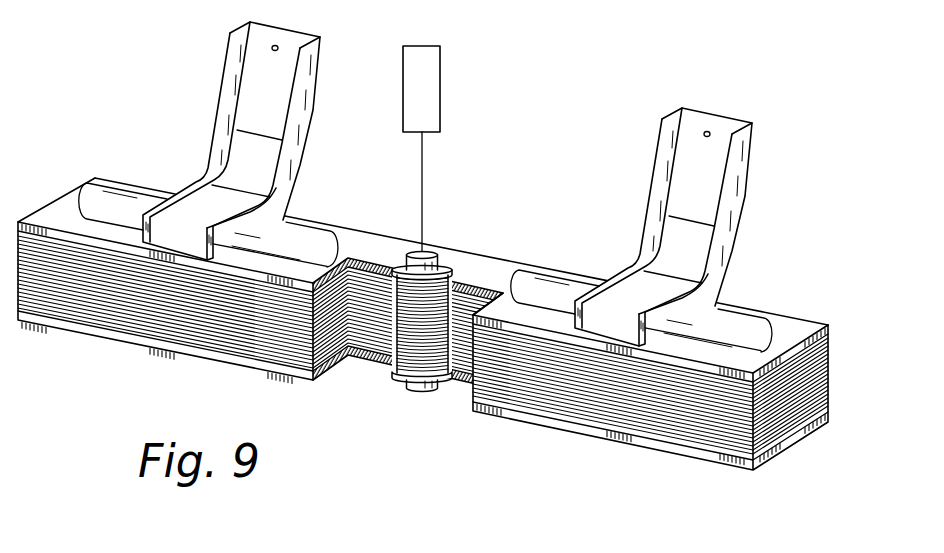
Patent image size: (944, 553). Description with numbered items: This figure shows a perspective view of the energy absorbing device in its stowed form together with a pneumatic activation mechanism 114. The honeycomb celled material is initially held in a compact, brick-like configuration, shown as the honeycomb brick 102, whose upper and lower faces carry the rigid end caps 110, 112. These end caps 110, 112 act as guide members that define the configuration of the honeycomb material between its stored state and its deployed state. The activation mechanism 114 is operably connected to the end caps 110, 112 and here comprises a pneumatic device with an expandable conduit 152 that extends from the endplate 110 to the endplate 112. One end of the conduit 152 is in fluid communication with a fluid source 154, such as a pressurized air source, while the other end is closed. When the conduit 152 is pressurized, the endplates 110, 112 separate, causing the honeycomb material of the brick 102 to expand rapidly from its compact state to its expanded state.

The honeycomb brick 102 is at (650, 367).
The end cap 110 is at (788, 328).
The end cap 112 is at (153, 345).
The activation mechanism 114 is at (442, 241).
The expandable conduit 152 is at (424, 365).
The fluid source 154 is at (442, 87).